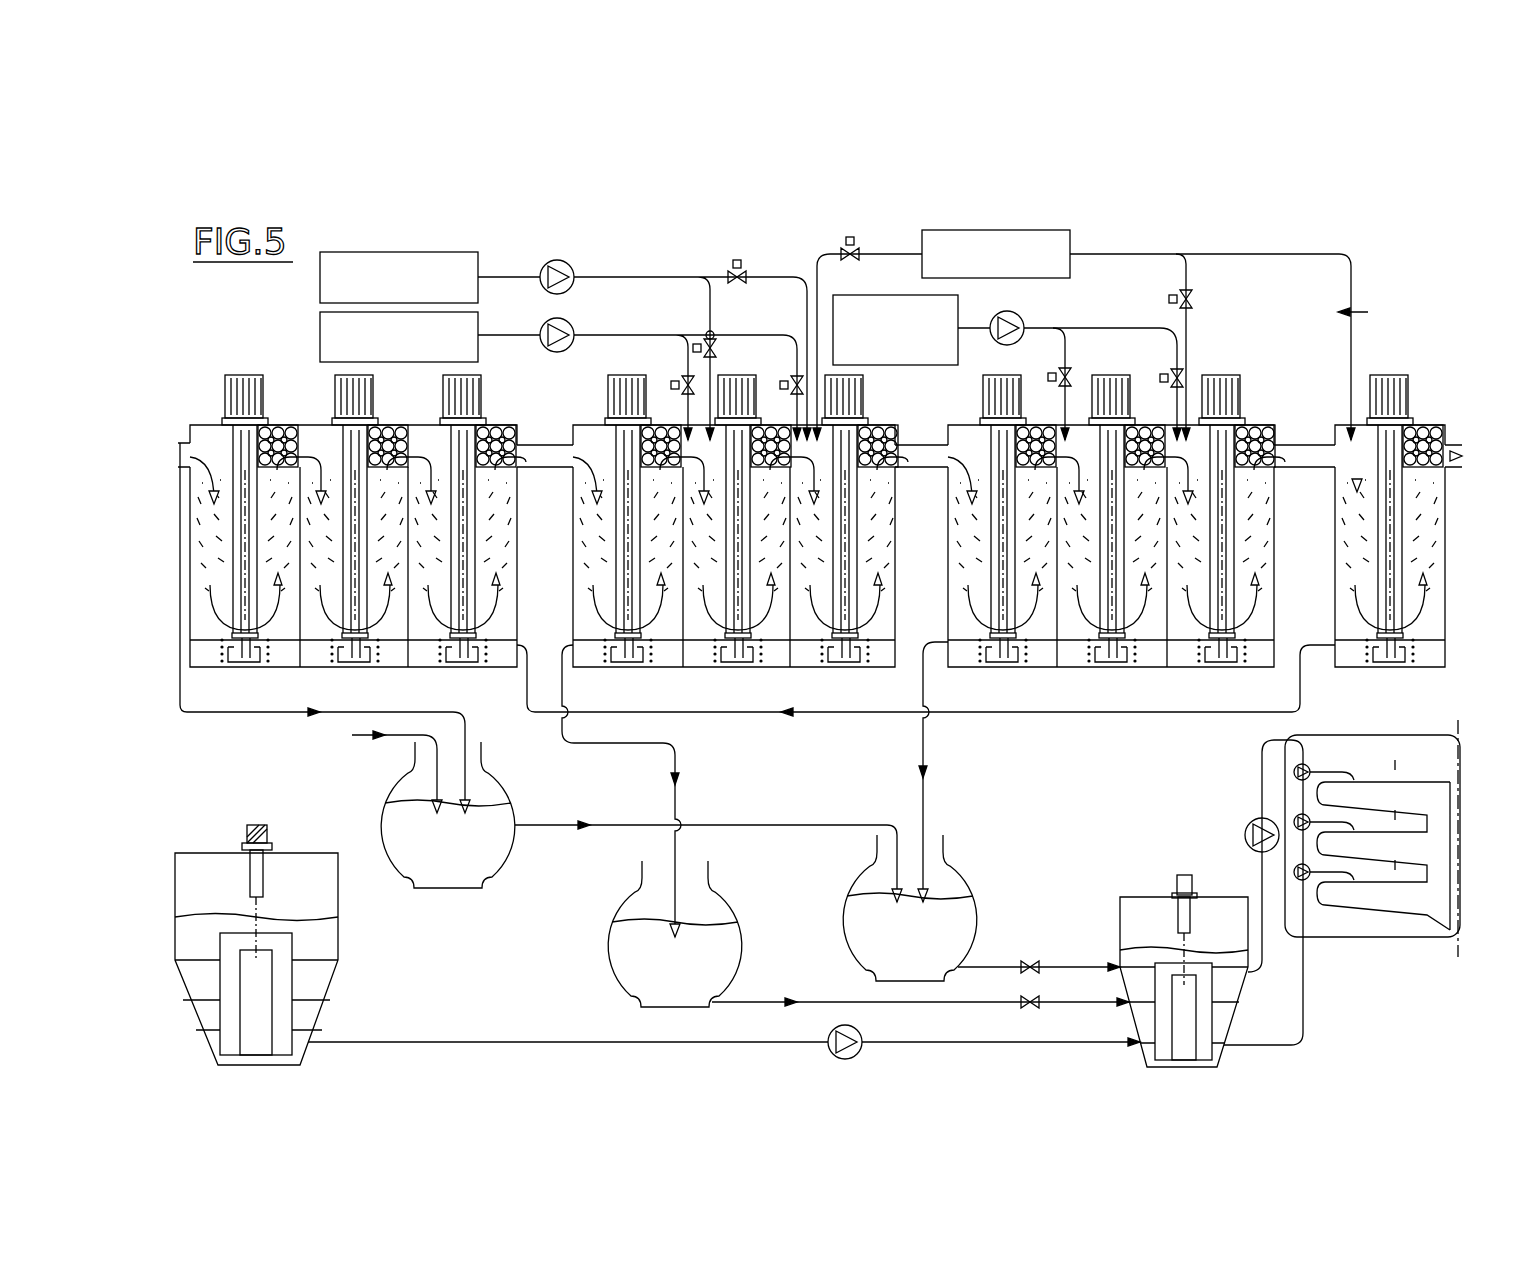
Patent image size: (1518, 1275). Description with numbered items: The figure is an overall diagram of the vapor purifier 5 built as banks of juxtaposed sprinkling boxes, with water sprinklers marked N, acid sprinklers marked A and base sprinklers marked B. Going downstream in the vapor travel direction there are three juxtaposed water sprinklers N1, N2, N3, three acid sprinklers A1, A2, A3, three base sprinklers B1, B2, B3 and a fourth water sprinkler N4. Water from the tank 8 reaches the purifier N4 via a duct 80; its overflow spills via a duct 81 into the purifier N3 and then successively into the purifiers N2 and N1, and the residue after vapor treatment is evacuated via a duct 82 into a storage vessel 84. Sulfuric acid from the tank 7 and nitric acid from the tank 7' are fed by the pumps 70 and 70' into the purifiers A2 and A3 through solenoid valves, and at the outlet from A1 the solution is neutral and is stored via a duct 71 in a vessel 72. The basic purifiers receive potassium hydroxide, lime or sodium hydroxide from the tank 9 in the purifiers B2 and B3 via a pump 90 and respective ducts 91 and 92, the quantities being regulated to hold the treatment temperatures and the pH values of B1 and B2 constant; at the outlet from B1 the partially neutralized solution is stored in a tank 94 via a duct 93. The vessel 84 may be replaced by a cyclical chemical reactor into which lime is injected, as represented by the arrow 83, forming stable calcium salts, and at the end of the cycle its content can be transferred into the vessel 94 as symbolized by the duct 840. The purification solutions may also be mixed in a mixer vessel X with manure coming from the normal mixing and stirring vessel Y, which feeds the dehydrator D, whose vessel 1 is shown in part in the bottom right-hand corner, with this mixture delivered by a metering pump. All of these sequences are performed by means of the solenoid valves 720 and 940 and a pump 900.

The treatment installation 5 is at (213, 390).
The tank containing sulfuric acid 7 is at (565, 346).
The tank containing nitric acid 7' is at (561, 376).
The pump 70 is at (584, 259).
The pump 70' is at (588, 317).
The tank containing water 8 is at (941, 335).
The duct 80 is at (1352, 258).
The duct 81 is at (1190, 278).
The tank containing potassium hydroxide, lime, or sodium hydroxide 9 is at (895, 330).
The pump 90 is at (1025, 315).
The duct 91 is at (1139, 328).
The duct 92 is at (1066, 352).
The water sprinkler N1 is at (190, 590).
The water sprinkler N2 is at (315, 642).
The water sprinkler N3 is at (502, 610).
The fourth water sprinkler N4 is at (1425, 538).
The acid sprinkler A1 is at (573, 530).
The acid sprinkler A2 is at (703, 622).
The acid sprinkler A3 is at (882, 616).
The base sprinkler B1 is at (948, 558).
The base sprinkler B2 is at (1078, 625).
The base sprinkler B3 is at (1262, 595).
The duct 82 is at (228, 715).
The arrow 83 is at (375, 769).
The storage vessel 84 is at (450, 873).
The duct 71 is at (680, 800).
The duct 840 is at (778, 825).
The vessel 72 is at (730, 902).
The duct 93 is at (925, 748).
The tank 94 is at (978, 905).
The solenoid valve 940 is at (1032, 962).
The solenoid valve 720 is at (1030, 1006).
The pump 900 is at (830, 1036).
The mixer vessel X is at (1150, 888).
The mixing and stirring vessel Y is at (340, 984).
The dehydrator D is at (1393, 947).
The vessel of a dehydrator 1 is at (1400, 735).